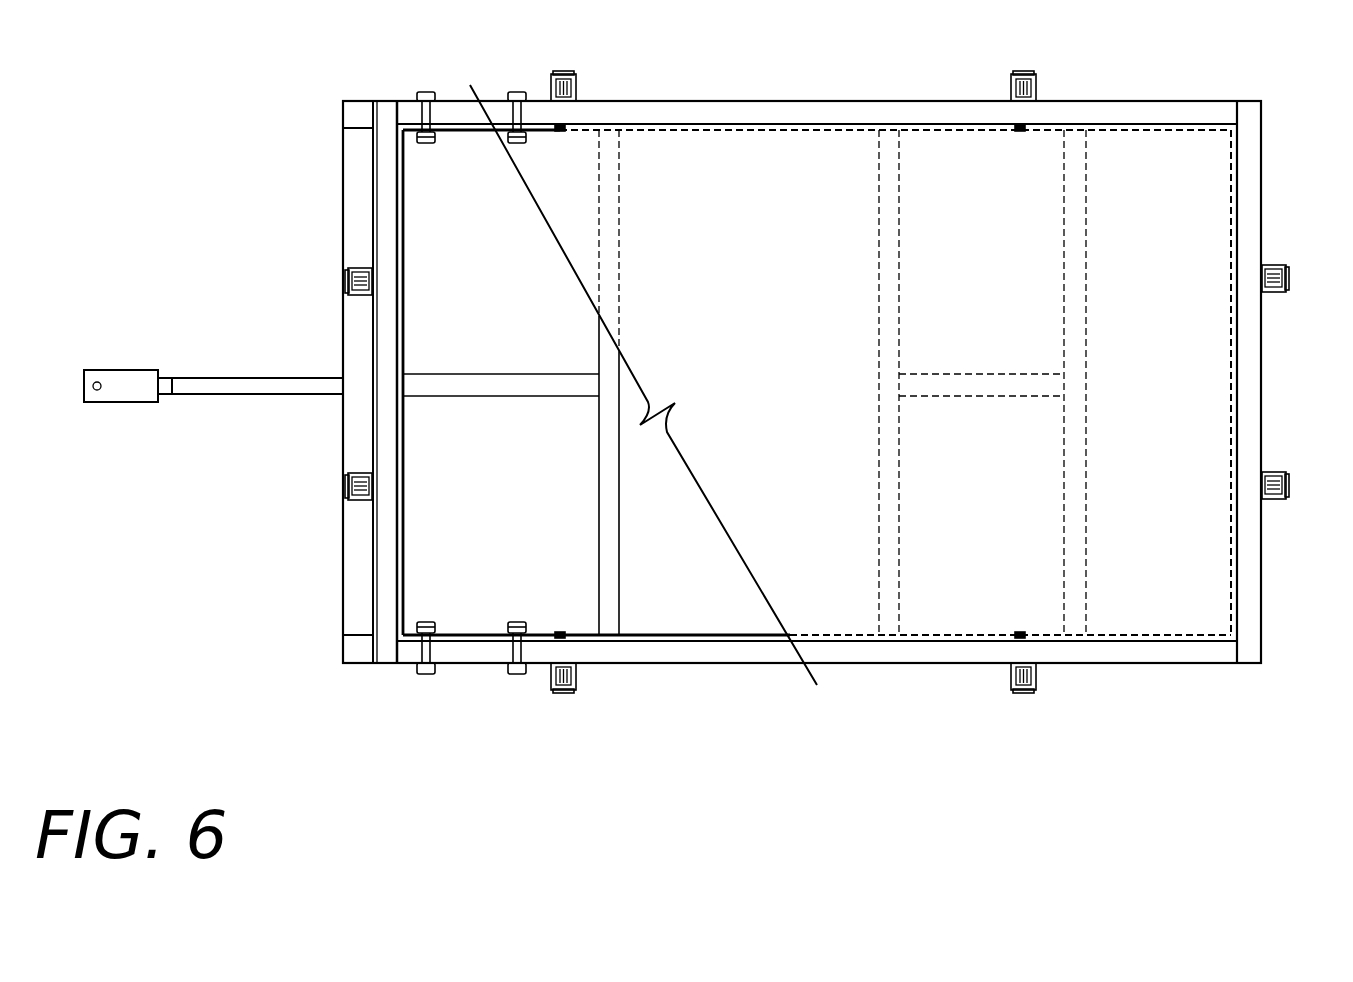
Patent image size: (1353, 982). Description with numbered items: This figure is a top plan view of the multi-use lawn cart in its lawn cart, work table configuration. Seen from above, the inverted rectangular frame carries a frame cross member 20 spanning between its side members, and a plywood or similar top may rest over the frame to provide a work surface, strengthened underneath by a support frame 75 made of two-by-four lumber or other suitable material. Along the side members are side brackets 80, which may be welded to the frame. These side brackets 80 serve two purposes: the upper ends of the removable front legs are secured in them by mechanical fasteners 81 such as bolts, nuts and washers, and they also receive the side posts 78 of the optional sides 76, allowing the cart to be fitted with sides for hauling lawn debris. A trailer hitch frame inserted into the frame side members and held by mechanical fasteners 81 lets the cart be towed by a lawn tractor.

The frame cross member 20 is at (1087, 535).
The support frame 75 is at (530, 490).
The sides 76 is at (1223, 100).
The side posts 78 is at (565, 72).
The side brackets 80 is at (577, 86).
The mechanical fasteners 81 is at (517, 92).